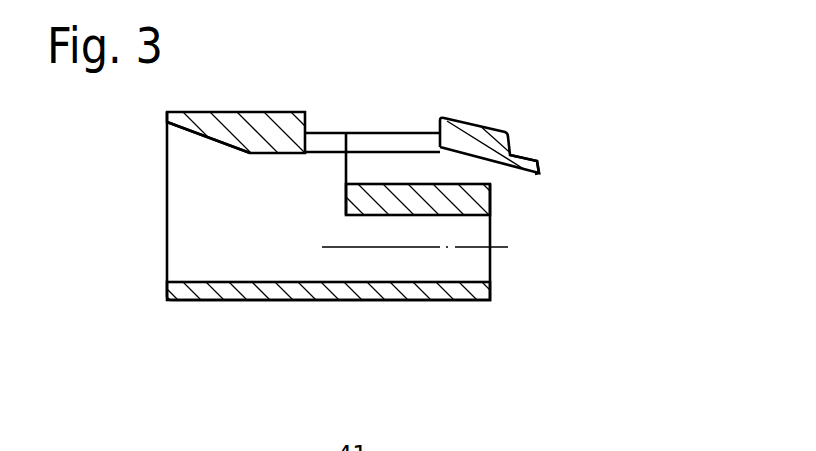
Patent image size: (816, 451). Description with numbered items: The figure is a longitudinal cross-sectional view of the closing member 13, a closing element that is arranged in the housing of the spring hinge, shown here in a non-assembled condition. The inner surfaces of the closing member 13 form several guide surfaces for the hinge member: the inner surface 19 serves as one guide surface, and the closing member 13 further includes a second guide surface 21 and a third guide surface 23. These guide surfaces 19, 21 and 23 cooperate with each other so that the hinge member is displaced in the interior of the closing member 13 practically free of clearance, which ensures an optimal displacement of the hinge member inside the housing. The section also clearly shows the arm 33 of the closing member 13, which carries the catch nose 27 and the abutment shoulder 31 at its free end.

The closing member 13 is at (252, 100).
The inner surface 19 is at (226, 279).
The second guide surface 21 is at (430, 217).
The third guide surface 23 is at (265, 158).
The catch nose 27 is at (468, 140).
The abutment shoulder 31 is at (536, 160).
The arm 33 is at (393, 146).